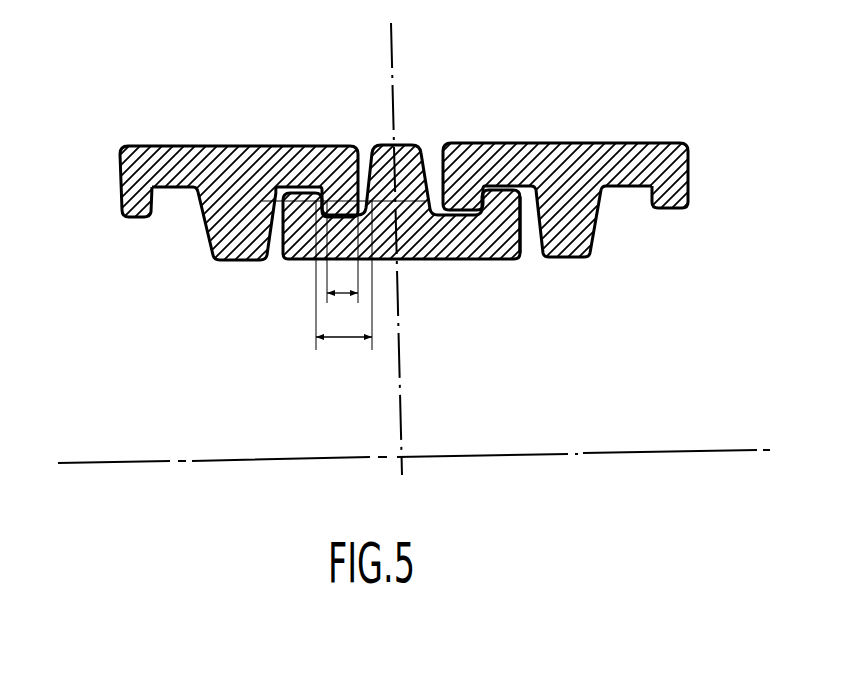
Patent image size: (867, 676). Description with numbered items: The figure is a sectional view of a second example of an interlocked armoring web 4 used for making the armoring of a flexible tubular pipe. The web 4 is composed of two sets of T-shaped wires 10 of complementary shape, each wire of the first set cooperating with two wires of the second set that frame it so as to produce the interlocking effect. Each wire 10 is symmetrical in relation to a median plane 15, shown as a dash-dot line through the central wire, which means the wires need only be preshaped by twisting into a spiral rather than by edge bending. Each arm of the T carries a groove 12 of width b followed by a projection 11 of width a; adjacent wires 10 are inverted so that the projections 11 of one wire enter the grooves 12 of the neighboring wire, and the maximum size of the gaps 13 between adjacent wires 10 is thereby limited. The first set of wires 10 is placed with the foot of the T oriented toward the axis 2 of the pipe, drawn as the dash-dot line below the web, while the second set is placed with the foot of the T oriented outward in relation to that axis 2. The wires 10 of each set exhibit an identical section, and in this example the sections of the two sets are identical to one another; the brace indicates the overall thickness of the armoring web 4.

The axis 2 is at (652, 450).
The armoring web 4 is at (713, 122).
The wires 10 is at (282, 146).
The projection 11 is at (130, 218).
The groove 12 is at (176, 189).
The gaps 13 is at (272, 262).
The median plane 15 is at (393, 82).
The width of projection a is at (343, 263).
The width of groove b is at (344, 288).